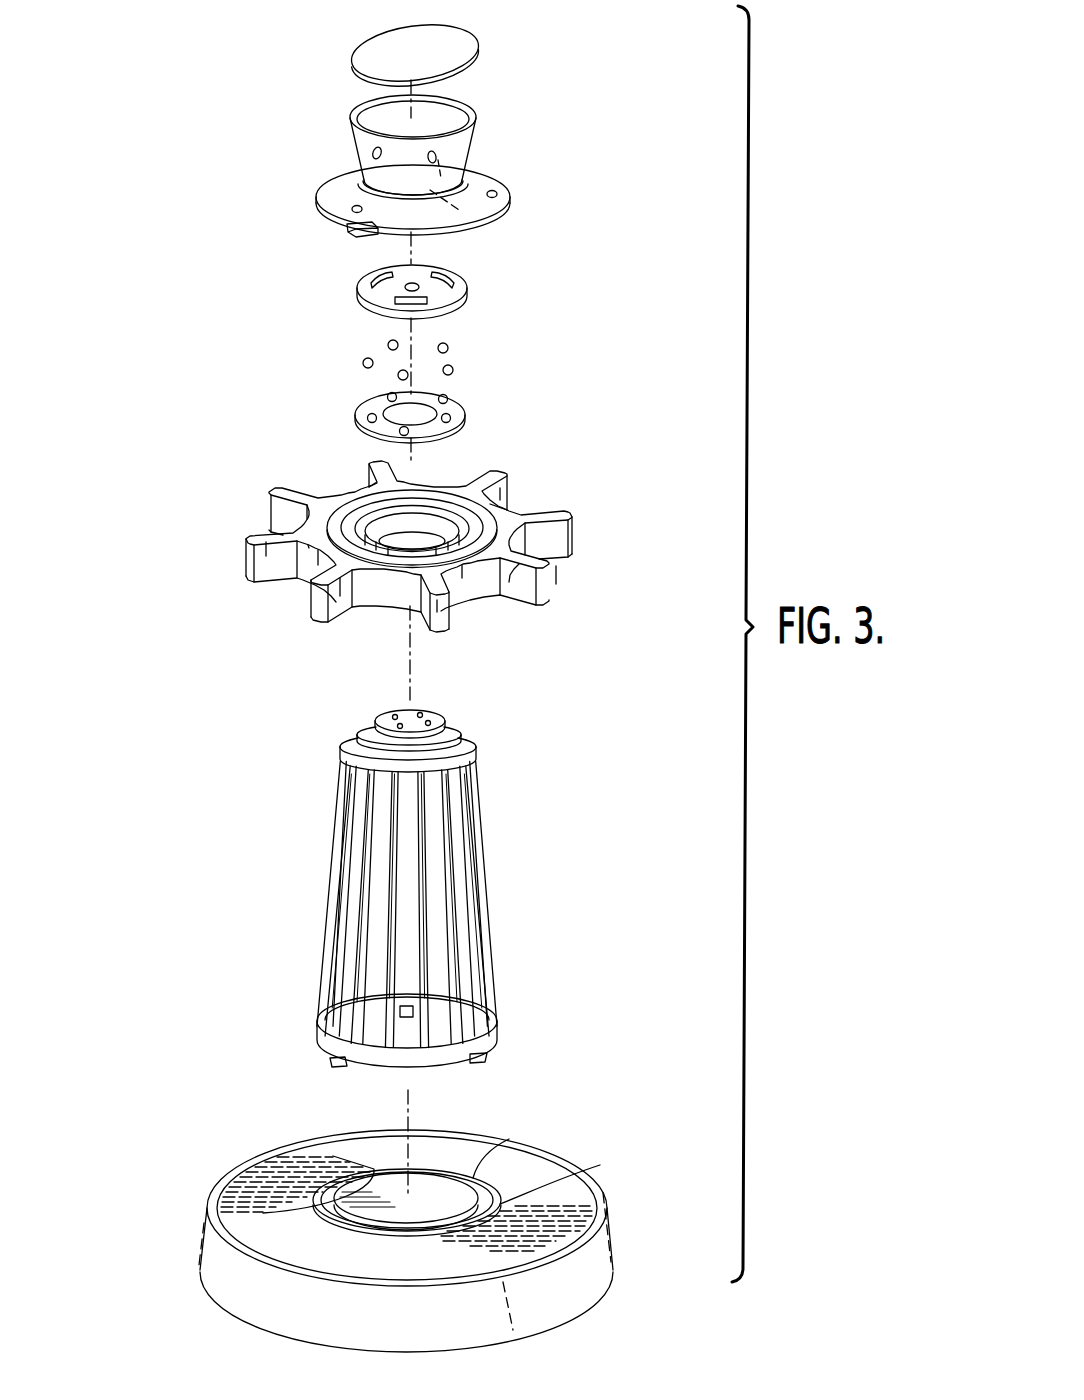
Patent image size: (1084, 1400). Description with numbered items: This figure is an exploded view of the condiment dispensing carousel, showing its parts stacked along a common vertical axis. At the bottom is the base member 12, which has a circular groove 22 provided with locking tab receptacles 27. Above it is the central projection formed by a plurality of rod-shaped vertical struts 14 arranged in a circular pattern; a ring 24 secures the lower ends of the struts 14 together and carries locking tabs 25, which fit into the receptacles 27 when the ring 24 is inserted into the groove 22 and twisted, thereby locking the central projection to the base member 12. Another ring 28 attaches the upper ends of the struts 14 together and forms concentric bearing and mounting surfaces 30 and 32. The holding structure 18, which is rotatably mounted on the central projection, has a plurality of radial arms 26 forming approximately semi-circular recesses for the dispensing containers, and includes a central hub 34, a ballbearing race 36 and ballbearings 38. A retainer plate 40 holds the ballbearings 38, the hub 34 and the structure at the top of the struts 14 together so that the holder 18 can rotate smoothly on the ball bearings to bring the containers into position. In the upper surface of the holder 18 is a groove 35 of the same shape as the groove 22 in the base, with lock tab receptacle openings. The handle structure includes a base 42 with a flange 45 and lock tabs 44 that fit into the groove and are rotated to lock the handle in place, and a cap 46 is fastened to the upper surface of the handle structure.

The base member 12 is at (584, 1290).
The vertical struts 14 is at (455, 886).
The holding structure 18 is at (380, 548).
The circular groove 22 is at (509, 1139).
The ring 24 is at (497, 1025).
The locking tabs 25 is at (330, 1062).
The radial arms 26 is at (550, 582).
The locking tab receptacles 27 is at (232, 1172).
The ring 28 is at (478, 744).
The bearing surface 30 is at (462, 720).
The mounting surface 32 is at (424, 711).
The central hub 34 is at (470, 482).
The groove 35 is at (497, 506).
The ballbearing race 36 is at (452, 412).
The ballbearings 38 is at (463, 358).
The retainer plate 40 is at (466, 291).
The base 42 is at (478, 163).
The lock tabs 44 is at (500, 214).
The flange 45 is at (317, 194).
The cap 46 is at (463, 32).